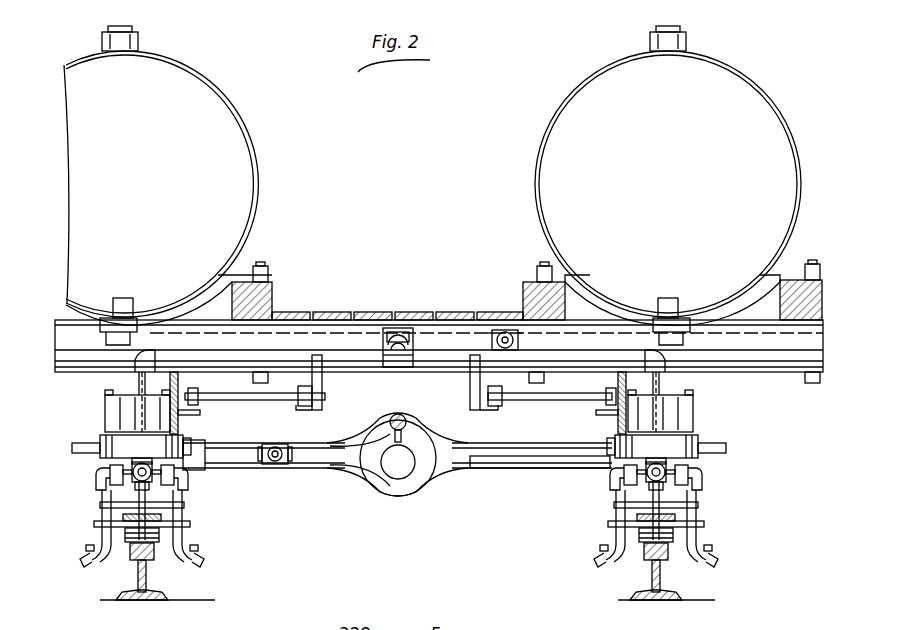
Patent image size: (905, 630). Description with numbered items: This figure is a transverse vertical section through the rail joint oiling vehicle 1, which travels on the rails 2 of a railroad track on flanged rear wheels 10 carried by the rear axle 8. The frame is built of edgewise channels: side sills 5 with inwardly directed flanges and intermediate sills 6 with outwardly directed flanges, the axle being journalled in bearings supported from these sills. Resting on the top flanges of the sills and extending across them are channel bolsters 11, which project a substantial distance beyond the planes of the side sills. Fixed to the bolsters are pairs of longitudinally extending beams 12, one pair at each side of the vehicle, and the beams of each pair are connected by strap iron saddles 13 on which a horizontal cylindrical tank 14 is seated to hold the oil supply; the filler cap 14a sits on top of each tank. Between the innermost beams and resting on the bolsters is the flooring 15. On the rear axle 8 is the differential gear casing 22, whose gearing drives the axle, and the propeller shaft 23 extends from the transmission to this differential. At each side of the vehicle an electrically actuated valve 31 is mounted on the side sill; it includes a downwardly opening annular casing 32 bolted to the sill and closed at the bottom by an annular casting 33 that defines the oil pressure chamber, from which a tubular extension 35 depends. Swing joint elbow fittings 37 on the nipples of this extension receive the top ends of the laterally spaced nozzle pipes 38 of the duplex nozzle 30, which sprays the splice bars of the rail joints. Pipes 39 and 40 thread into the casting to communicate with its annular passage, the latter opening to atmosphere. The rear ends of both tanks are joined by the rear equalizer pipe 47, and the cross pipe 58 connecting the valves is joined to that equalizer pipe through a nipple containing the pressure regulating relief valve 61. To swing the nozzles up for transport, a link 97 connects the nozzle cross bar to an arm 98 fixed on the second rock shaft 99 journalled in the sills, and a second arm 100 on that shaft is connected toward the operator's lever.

The vehicle 1 is at (708, 375).
The rails 2 is at (142, 600).
The side sills 5 is at (170, 408).
The intermediate sills 6 is at (316, 430).
The rear axle 8 is at (522, 470).
The rear wheels 10 is at (105, 516).
The bolsters 11 is at (762, 345).
The longitudinally extending beams 12 is at (272, 290).
The strap iron saddles 13 is at (74, 309).
The tank 14 is at (250, 204).
The tank filler cap 14a is at (134, 29).
The flooring 15 is at (306, 312).
The differential gear casing 22 is at (397, 474).
The propeller shaft 23 is at (394, 430).
The duplex nozzle 30 is at (100, 536).
The electrically actuated valve 31 is at (106, 401).
The annular casing 32 is at (104, 428).
The annular casting 33 is at (98, 451).
The tubular extension 35 is at (150, 486).
The swing joint elbow fitting 37 is at (110, 470).
The nozzle pipes 38 is at (112, 489).
The pipe 39 is at (545, 460).
The pipe 40 is at (726, 449).
The rear equalizer pipe 47 is at (351, 312).
The pipe 58 is at (424, 336).
The pressure regulating relief valve 61 is at (405, 330).
The link 97 is at (156, 552).
The arm 98 is at (180, 416).
The second rock shaft 99 is at (262, 400).
The second arm 100 is at (324, 382).